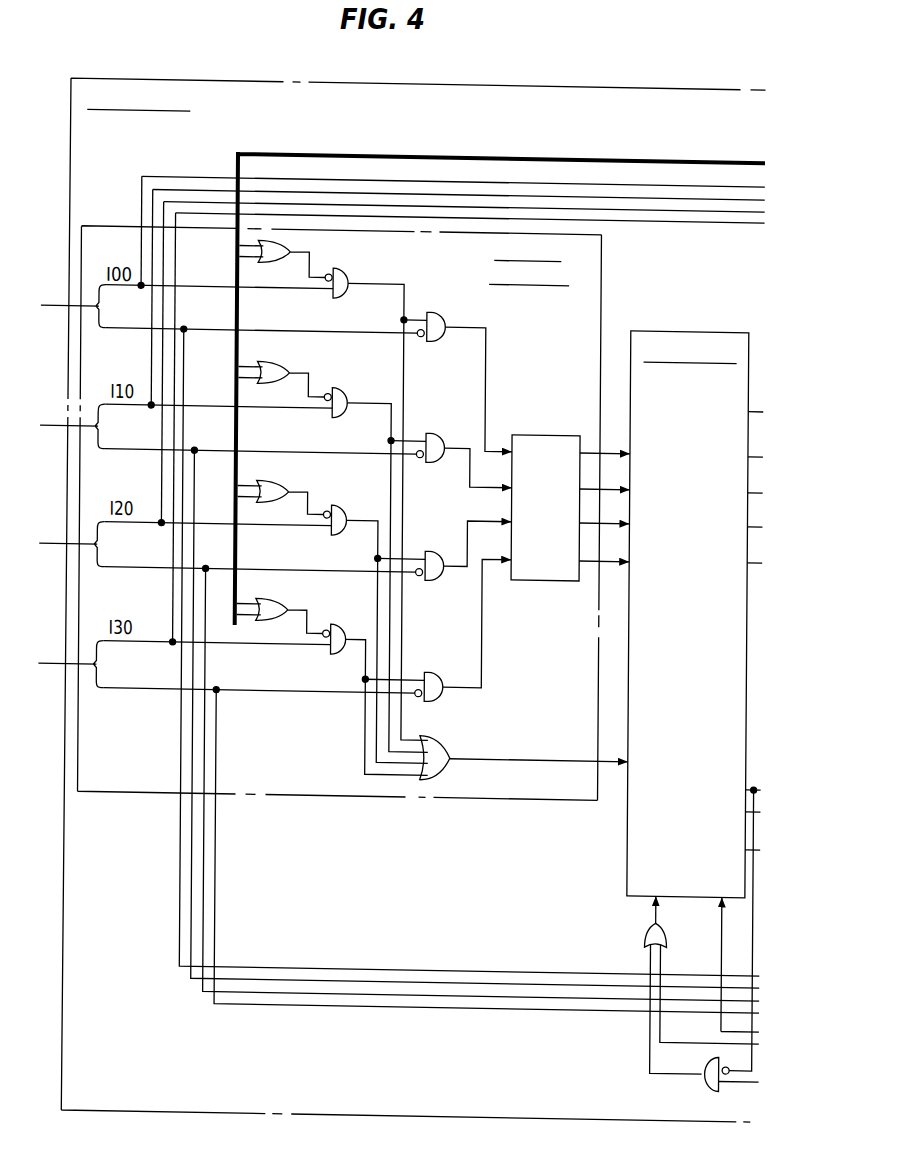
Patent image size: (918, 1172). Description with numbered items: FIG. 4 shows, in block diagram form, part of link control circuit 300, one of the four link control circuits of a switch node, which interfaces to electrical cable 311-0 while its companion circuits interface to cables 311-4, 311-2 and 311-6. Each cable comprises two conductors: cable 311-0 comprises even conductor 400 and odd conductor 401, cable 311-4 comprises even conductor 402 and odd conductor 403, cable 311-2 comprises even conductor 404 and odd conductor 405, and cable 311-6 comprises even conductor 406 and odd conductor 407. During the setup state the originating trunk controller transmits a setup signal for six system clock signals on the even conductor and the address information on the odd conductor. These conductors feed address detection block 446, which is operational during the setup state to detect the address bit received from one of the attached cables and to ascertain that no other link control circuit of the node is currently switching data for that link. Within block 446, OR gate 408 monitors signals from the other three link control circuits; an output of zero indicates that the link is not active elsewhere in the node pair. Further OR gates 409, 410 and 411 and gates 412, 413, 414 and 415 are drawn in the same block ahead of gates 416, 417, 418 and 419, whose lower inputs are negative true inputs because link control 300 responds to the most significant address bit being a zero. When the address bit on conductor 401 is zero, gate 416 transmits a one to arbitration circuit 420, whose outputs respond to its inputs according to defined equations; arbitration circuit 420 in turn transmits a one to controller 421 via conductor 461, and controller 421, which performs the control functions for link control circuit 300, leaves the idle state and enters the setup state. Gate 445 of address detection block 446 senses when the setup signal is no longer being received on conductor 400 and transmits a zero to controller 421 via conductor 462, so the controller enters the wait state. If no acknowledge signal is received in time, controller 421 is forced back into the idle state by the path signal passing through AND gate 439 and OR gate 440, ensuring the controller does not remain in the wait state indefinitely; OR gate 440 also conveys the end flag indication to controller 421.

The link control circuit 300 is at (232, 81).
The electrical cable 311-0 is at (52, 306).
The electrical cable 311-4 is at (52, 427).
The electrical cable 311-2 is at (52, 545).
The electrical cable 311-6 is at (52, 665).
The even conductor 400 is at (142, 262).
The odd conductor 401 is at (143, 333).
The even conductor 402 is at (151, 400).
The odd conductor 403 is at (143, 452).
The even conductor 404 is at (162, 518).
The odd conductor 405 is at (143, 570).
The even conductor 406 is at (174, 636).
The odd conductor 407 is at (143, 692).
The OR gate 408 is at (283, 250).
The OR gate 409 is at (283, 363).
The OR gate 410 is at (283, 483).
The OR gate 411 is at (283, 598).
The NAND gate 412 is at (348, 266).
The NAND gate 413 is at (348, 386).
The NAND gate 414 is at (344, 503).
The NAND gate 415 is at (334, 622).
The gate 416 is at (443, 311).
The gate 417 is at (436, 432).
The gate 418 is at (431, 548).
The gate 419 is at (428, 669).
The arbitration circuit 420 is at (543, 575).
The controller 421 is at (712, 324).
The AND gate 439 is at (708, 1080).
The OR gate 440 is at (648, 936).
The gate 445 is at (450, 746).
The address detection block 446 is at (602, 270).
The conductor 461 is at (590, 447).
The conductor 462 is at (517, 755).